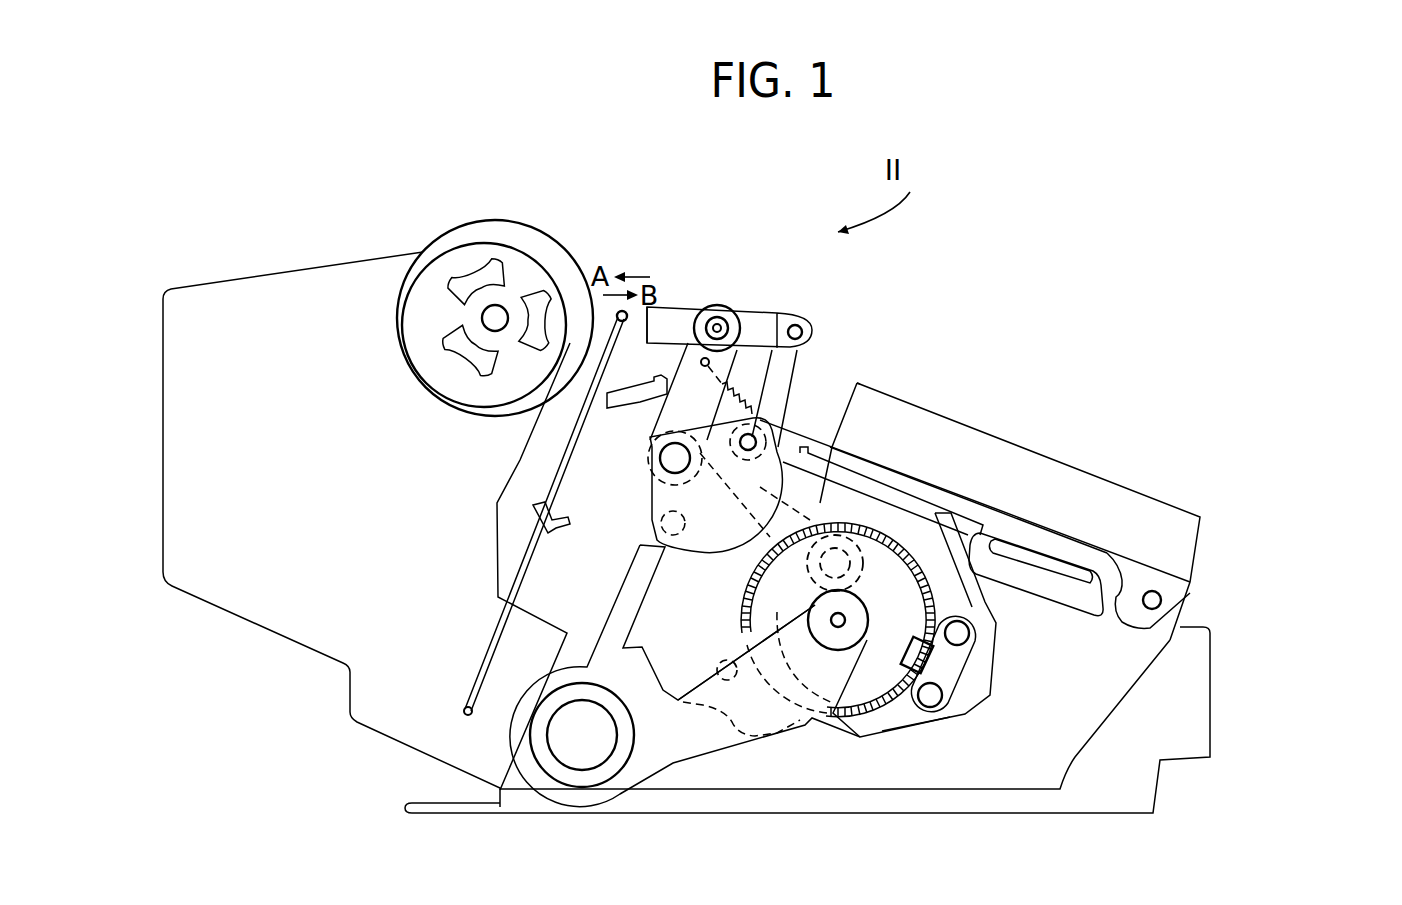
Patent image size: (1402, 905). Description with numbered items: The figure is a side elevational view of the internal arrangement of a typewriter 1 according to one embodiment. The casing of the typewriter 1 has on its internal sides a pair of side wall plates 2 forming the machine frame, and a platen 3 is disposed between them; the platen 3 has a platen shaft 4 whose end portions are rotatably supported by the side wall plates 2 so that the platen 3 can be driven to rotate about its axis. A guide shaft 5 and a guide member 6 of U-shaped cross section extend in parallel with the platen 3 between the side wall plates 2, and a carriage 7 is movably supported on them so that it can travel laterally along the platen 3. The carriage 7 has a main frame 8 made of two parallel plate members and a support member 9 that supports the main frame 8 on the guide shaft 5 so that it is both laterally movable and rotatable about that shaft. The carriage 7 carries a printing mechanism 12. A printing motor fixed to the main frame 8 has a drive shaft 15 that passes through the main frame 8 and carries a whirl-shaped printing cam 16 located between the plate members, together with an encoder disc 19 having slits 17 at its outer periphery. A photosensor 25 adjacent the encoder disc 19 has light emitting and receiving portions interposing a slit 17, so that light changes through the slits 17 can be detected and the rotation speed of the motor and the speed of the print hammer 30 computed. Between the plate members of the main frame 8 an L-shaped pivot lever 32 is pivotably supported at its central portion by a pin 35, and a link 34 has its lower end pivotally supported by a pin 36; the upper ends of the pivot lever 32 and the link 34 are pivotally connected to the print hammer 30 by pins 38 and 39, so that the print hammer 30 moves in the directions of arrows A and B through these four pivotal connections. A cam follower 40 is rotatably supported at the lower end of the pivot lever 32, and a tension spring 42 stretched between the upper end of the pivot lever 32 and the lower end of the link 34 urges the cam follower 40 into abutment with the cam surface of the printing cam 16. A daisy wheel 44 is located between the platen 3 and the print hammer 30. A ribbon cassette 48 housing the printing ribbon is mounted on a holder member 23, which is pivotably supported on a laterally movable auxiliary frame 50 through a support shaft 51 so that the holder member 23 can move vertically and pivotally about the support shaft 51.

The typewriter 1 is at (913, 243).
The side wall plates 2 is at (262, 625).
The platen 3 is at (470, 222).
The platen shaft 4 is at (500, 311).
The guide shaft 5 is at (587, 752).
The guide member 6 is at (1043, 558).
The carriage 7 is at (870, 763).
The main frame 8 is at (822, 503).
The support member 9 is at (692, 745).
The printing mechanism 12 is at (768, 297).
The drive shaft 15 is at (933, 612).
The printing cam 16 is at (880, 700).
The slits 17 is at (920, 505).
The encoder disc 19 is at (980, 610).
The holder member 23 is at (1117, 567).
The photosensor 25 is at (947, 670).
The print hammer 30 is at (677, 320).
The pivot lever 32 is at (652, 420).
The link 34 is at (767, 400).
The pin 35 is at (677, 458).
The pin 36 is at (762, 428).
The pin 38 is at (717, 328).
The pin 39 is at (800, 327).
The cam follower 40 is at (857, 517).
The tension spring 42 is at (762, 395).
The daisy wheel 44 is at (567, 437).
The ribbon cassette 48 is at (1015, 442).
The auxiliary frame 50 is at (1128, 712).
The support shaft 51 is at (1160, 600).